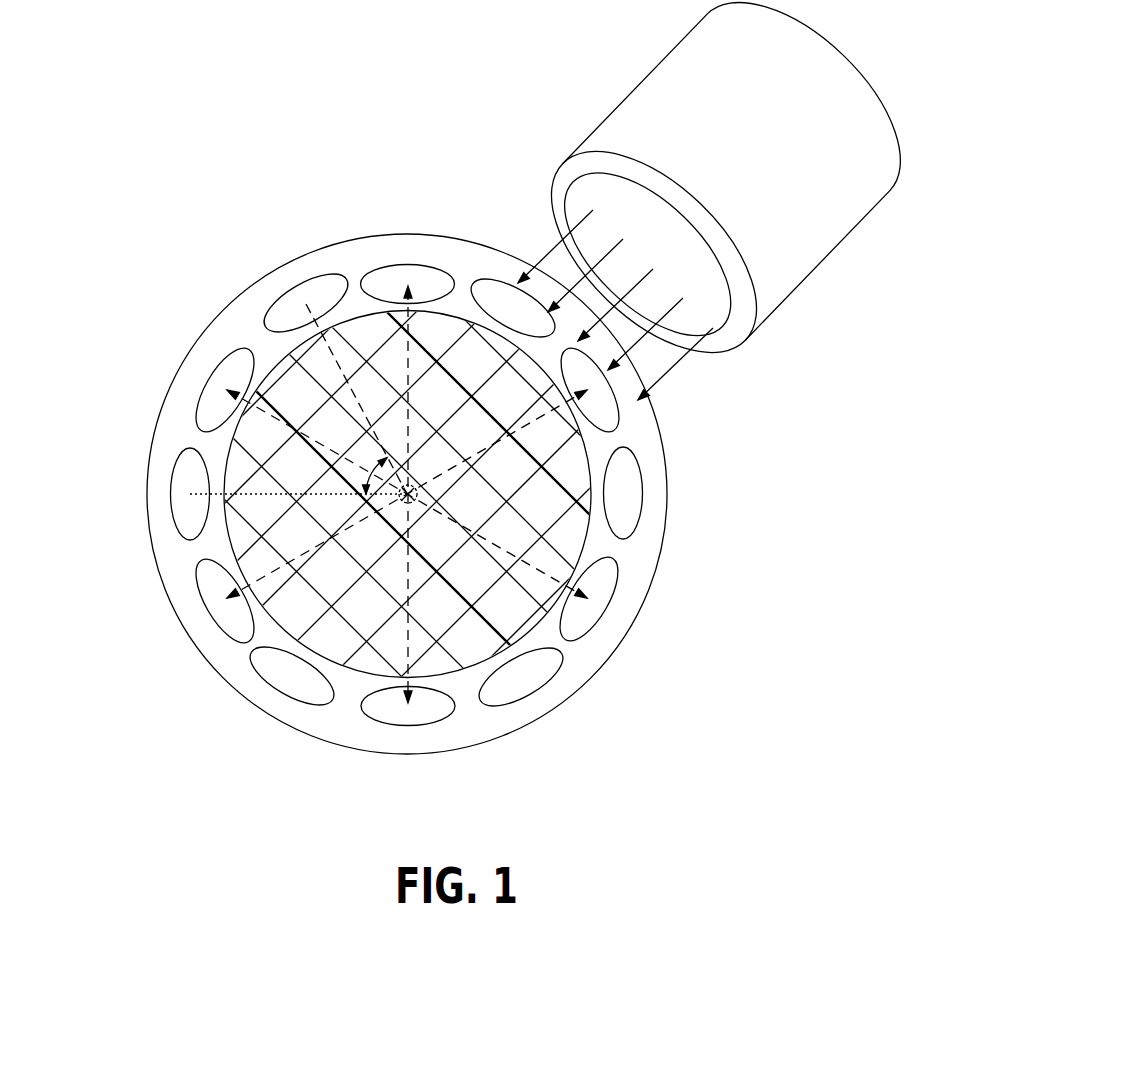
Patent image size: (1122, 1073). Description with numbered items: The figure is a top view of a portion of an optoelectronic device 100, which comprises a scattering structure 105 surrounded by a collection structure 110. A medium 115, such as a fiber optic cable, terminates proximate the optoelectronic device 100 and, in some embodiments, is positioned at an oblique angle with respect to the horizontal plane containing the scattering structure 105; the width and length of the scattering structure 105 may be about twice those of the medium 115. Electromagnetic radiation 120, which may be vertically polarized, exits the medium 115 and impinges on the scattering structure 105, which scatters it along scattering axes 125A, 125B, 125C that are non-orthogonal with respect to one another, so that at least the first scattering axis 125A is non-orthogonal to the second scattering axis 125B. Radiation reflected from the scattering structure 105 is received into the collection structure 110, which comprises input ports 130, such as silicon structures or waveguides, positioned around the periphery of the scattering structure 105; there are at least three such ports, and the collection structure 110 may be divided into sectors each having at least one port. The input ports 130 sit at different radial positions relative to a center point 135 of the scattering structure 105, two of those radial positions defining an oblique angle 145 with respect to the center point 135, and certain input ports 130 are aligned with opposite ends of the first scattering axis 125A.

The optoelectronic device 100 is at (142, 193).
The scattering structure 105 is at (252, 546).
The collection structure 110 is at (223, 332).
The medium 115 is at (632, 135).
The electromagnetic radiation 120 is at (540, 275).
The first scattering axis 125A is at (408, 368).
The second scattering axis 125B is at (475, 450).
The third scattering axis 125C is at (570, 543).
The input ports 130 is at (386, 242).
The center point 135 is at (400, 506).
The oblique angle 145 is at (365, 485).